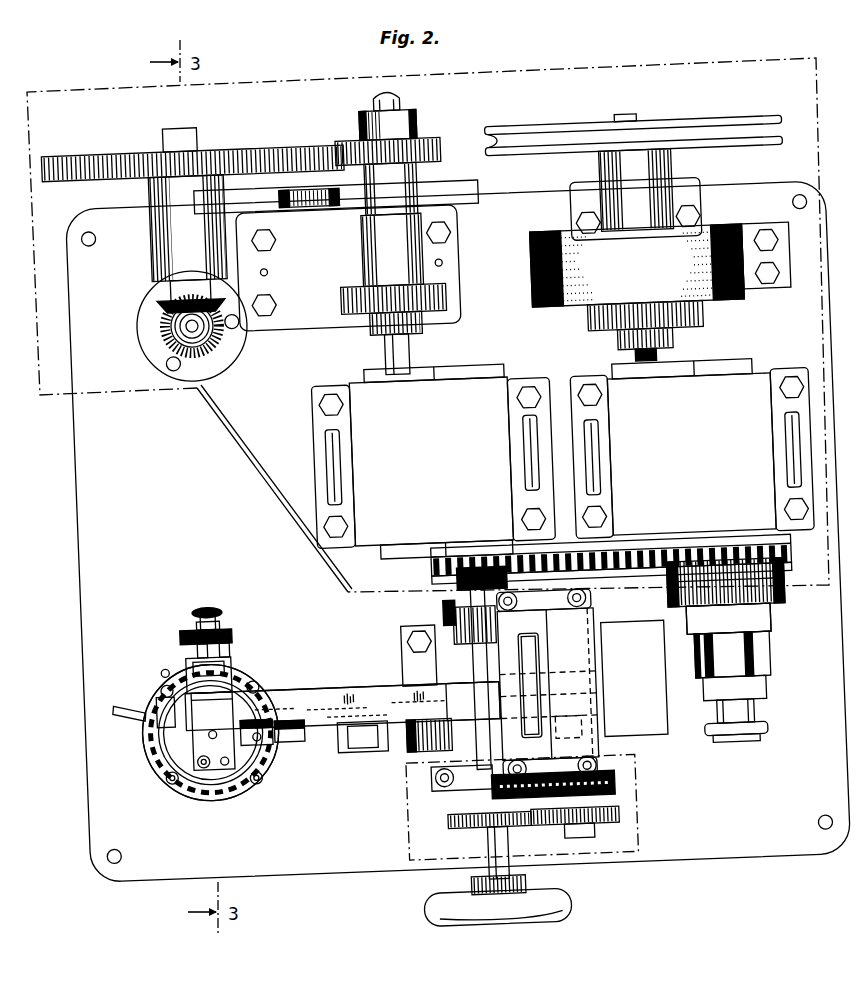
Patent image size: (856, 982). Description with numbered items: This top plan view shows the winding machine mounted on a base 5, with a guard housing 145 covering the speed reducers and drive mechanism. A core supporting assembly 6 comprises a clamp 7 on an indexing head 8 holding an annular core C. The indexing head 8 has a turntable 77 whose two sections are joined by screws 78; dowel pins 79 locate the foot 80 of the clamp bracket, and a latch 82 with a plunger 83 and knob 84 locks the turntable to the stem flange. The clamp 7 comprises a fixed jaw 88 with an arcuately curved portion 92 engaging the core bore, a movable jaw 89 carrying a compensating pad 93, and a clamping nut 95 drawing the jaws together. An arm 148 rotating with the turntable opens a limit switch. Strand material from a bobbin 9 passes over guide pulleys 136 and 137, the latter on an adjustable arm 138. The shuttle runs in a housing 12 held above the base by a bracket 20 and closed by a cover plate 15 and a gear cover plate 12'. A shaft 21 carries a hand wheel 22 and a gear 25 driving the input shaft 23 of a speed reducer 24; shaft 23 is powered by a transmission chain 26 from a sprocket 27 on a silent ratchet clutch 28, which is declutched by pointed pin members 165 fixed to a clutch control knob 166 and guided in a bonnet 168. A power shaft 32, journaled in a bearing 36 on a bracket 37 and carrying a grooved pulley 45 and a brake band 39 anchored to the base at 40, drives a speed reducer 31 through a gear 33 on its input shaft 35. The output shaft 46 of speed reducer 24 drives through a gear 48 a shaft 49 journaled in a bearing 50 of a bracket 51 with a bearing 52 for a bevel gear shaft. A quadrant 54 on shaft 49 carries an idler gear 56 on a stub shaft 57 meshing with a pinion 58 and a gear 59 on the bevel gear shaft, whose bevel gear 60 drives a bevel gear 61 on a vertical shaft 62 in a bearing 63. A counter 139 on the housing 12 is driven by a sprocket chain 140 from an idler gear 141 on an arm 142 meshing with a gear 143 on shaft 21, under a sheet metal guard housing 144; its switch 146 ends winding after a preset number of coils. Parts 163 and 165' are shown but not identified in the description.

The base 5 is at (752, 860).
The core supporting assembly 6 is at (158, 645).
The clamp 7 is at (236, 660).
The indexing head 8 is at (229, 800).
The bobbin 9 is at (345, 754).
The housing 12 is at (342, 697).
The cover plate 12' is at (433, 691).
The cover plate 15 is at (280, 688).
The bracket 20 is at (412, 752).
The shaft 21 is at (488, 842).
The hand wheel 22 is at (487, 912).
The input shaft 23 is at (470, 588).
The speed reducer 24 is at (453, 468).
The gear 25 is at (448, 614).
The transmission chain 26 is at (642, 570).
The sprocket 27 is at (780, 548).
The silent ratchet clutch 28 is at (782, 620).
The speed reducer 31 is at (657, 443).
The power shaft 32 is at (636, 120).
The gear 33 is at (712, 314).
The input shaft 35 is at (660, 355).
The bearing 36 is at (638, 226).
The bracket 37 is at (705, 195).
The brake band 39 is at (572, 246).
The brake band fixed end 40 is at (760, 240).
The grooved pulley 45 is at (740, 123).
The output shaft 46 is at (412, 356).
The gear 48 is at (452, 292).
The shaft 49 is at (372, 330).
The bearing 50 is at (382, 247).
The bracket 51 is at (295, 326).
The bearing 52 is at (180, 253).
The quadrant 54 is at (352, 179).
The idler gear 56 is at (332, 146).
The stub shaft 57 is at (385, 92).
The pinion 58 is at (416, 130).
The gear 59 is at (106, 156).
The bevel gear 60 is at (170, 309).
The bevel gear 61 is at (170, 331).
The vertical shaft 62 is at (200, 340).
The bearing 63 is at (246, 345).
The turntable 77 is at (186, 800).
The screws 78 is at (167, 778).
The dowel pins 79 is at (212, 749).
The foot 80 is at (190, 752).
The latch 82 is at (216, 622).
The plunger 83 is at (193, 626).
The knob 84 is at (206, 604).
The fixed clamping jaw 88 is at (160, 724).
The movable clamping jaw 89 is at (196, 666).
The arcuately curved portion 92 is at (200, 694).
The compensating pad 93 is at (163, 668).
The clamping nut 95 is at (230, 633).
The guide pulley 136 is at (302, 742).
The guide pulley 137 is at (277, 738).
The arm 138 is at (250, 716).
The counter 139 is at (552, 663).
The sprocket chain 140 is at (615, 790).
The idler gear 141 is at (620, 816).
The arm 142 is at (455, 788).
The gear 143 is at (445, 825).
The sheet metal guard housing 144 is at (652, 841).
The guard housing 145 is at (612, 64).
The switch 146 is at (636, 681).
The arm 148 is at (126, 708).
The knob 163 is at (790, 598).
The pointed pin members 165 is at (752, 666).
The sleeve 165' is at (735, 687).
The clutch control knob 166 is at (770, 690).
The bonnet 168 is at (745, 626).
The annular core C is at (150, 745).